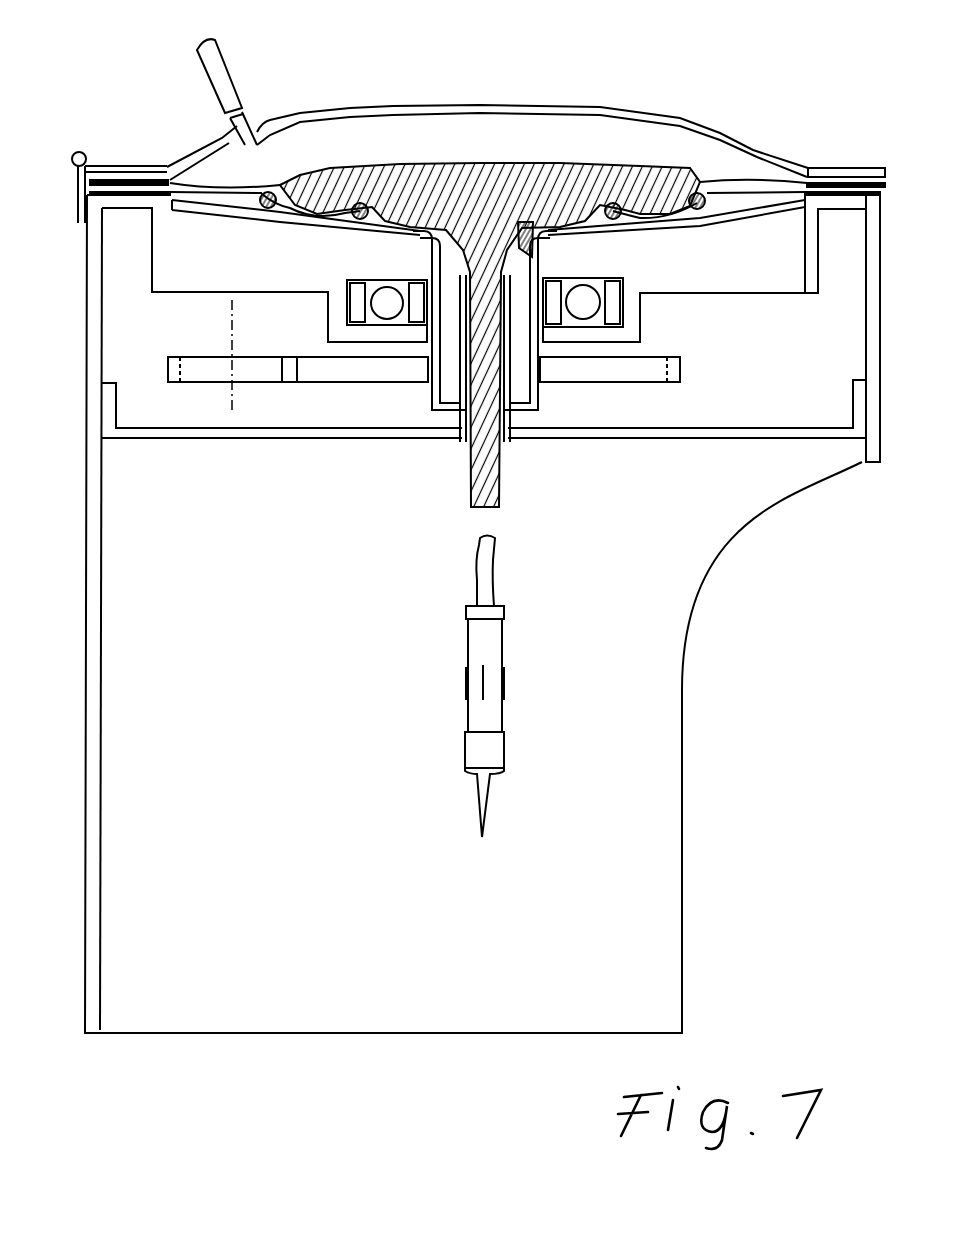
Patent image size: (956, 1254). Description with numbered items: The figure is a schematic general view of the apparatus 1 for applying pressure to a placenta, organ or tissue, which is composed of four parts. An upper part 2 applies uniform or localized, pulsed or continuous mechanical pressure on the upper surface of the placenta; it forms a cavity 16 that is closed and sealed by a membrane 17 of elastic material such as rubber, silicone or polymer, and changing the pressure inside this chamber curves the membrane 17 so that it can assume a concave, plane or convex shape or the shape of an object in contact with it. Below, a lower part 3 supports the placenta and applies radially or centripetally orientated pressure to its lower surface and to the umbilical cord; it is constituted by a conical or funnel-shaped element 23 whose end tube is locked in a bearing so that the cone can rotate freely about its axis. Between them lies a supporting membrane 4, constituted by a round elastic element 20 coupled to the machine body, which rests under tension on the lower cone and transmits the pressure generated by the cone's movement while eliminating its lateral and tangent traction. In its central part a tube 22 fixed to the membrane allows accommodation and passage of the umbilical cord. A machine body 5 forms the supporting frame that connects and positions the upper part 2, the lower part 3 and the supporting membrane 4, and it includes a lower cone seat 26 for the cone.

The apparatus 1 is at (755, 571).
The upper part 2 is at (796, 147).
The lower part 3 is at (665, 229).
The supporting membrane 4 is at (455, 265).
The machine body 5 is at (82, 510).
The cavity 16 is at (337, 130).
The membrane 17 is at (708, 173).
The element 20 is at (373, 212).
The tube 22 is at (461, 365).
The conical or funnel-shaped element 23 is at (705, 223).
The lower cone seat 26 is at (768, 293).